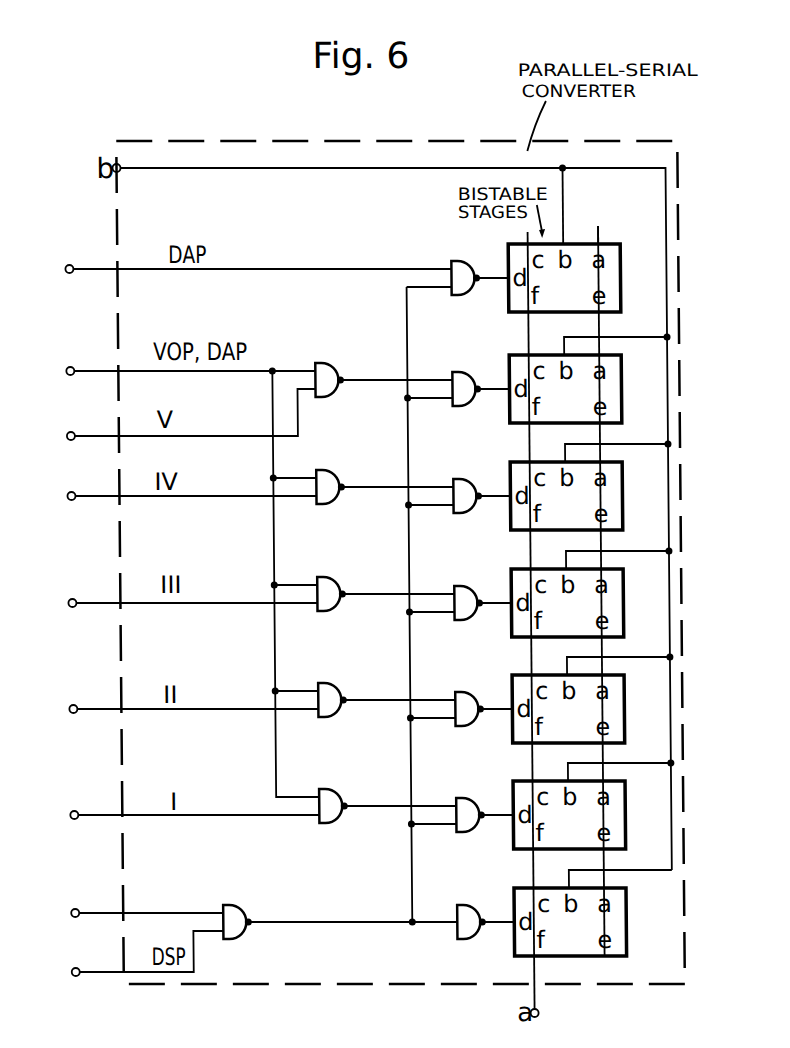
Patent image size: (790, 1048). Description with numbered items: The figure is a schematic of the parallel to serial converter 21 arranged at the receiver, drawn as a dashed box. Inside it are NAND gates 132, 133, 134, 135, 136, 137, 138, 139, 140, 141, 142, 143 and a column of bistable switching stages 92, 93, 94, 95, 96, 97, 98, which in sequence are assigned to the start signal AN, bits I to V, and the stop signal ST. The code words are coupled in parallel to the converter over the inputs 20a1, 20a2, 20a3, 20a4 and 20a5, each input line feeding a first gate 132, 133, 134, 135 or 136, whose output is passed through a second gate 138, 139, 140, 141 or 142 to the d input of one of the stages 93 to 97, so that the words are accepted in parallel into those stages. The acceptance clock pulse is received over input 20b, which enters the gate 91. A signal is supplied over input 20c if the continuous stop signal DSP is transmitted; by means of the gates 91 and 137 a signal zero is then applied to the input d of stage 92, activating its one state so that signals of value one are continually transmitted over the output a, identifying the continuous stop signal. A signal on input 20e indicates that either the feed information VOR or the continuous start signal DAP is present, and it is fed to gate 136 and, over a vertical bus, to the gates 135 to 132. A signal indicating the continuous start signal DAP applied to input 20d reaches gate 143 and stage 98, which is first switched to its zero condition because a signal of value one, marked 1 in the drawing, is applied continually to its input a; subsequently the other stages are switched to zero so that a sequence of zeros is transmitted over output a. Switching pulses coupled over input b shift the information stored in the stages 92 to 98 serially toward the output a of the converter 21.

The parallel to serial converter 21 is at (413, 143).
The logic one input line 1 is at (602, 220).
The gate 91 is at (233, 910).
The bistable switching stage 92 is at (628, 923).
The bistable switching stage 93 is at (628, 816).
The bistable switching stage 94 is at (628, 710).
The bistable switching stage 95 is at (628, 604).
The bistable switching stage 96 is at (628, 497).
The bistable switching stage 97 is at (628, 390).
The bistable switching stage 98 is at (628, 279).
The NAND gate 132 is at (329, 792).
The NAND gate 133 is at (328, 686).
The NAND gate 134 is at (327, 580).
The NAND gate 135 is at (326, 473).
The NAND gate 136 is at (325, 366).
The NAND gate 137 is at (466, 907).
The NAND gate 138 is at (465, 800).
The NAND gate 139 is at (464, 694).
The NAND gate 140 is at (463, 588).
The NAND gate 141 is at (462, 481).
The NAND gate 142 is at (461, 374).
The NAND gate 143 is at (460, 263).
The input 20a1 is at (190, 803).
The input 20a2 is at (189, 696).
The input 20a3 is at (188, 588).
The input 20a4 is at (187, 484).
The input 20a5 is at (187, 414).
The input 20b is at (143, 900).
The input 20c is at (143, 953).
The input 20d is at (254, 254).
The input 20e is at (186, 355).